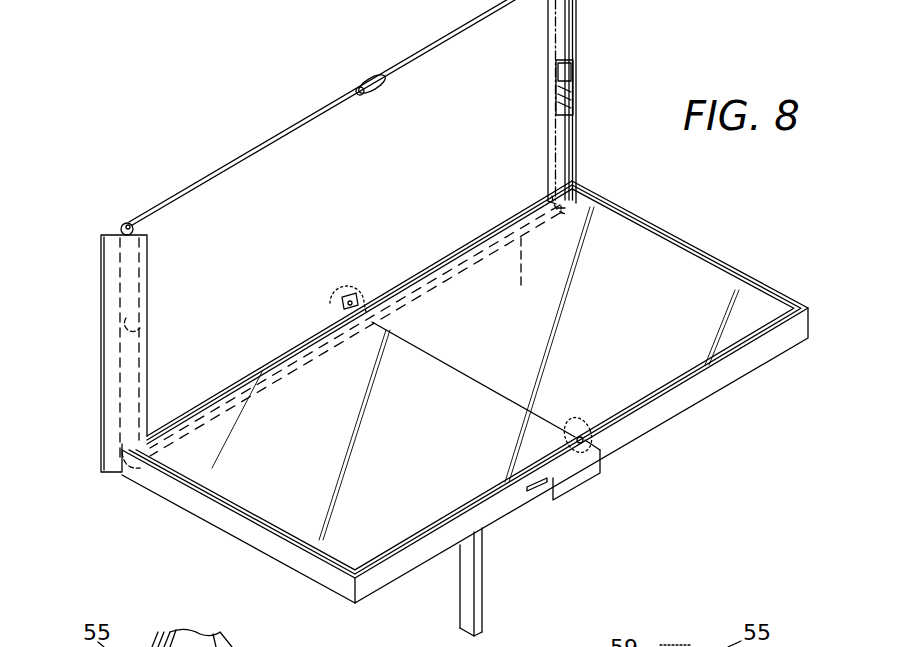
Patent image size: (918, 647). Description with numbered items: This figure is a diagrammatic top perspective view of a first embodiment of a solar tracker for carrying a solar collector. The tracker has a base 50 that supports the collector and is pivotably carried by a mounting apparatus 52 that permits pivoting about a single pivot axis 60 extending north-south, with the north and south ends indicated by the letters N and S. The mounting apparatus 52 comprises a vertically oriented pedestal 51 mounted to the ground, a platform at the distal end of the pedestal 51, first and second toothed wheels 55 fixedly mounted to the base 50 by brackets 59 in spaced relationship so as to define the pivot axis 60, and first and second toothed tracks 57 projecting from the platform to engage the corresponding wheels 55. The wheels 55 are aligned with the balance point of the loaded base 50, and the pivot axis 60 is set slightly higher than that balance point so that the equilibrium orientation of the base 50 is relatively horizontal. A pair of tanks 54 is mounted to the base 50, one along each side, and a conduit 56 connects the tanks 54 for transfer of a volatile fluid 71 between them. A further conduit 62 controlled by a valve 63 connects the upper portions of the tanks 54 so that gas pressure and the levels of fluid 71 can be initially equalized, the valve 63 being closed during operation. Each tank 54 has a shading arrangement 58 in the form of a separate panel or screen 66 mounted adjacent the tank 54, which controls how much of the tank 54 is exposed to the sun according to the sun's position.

The base 50 is at (740, 375).
The pedestal 51 is at (482, 595).
The mounting apparatus 52 is at (556, 537).
The tanks 54 is at (116, 252).
The toothed wheels 55 is at (352, 286).
The conduit 56 is at (531, 274).
The toothed tracks 57 is at (540, 490).
The shading arrangement 58 is at (163, 283).
The brackets 59 is at (368, 306).
The pivot axis 60 is at (455, 372).
The further conduit 62 is at (268, 140).
The valve 63 is at (372, 76).
The panel or screen 66 is at (101, 288).
The volatile fluid 71 is at (555, 70).
The net N is at (338, 292).
The string S is at (592, 447).